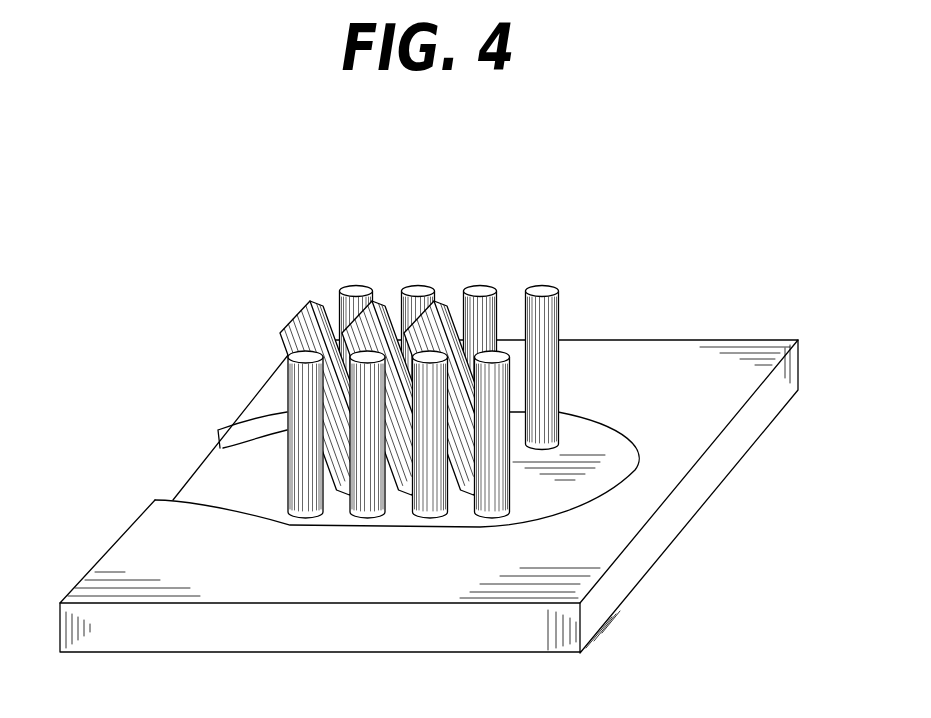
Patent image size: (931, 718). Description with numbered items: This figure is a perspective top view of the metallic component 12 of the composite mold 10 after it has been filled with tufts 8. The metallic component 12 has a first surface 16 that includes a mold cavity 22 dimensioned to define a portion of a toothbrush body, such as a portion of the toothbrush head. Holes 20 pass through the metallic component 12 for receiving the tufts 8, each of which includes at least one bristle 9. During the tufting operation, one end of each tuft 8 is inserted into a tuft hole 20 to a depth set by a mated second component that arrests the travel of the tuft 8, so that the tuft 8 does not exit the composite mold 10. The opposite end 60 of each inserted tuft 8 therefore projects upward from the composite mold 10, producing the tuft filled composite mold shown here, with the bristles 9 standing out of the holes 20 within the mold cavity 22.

The tufts 8 is at (338, 298).
The bristle 9 is at (502, 308).
The composite mold 10 is at (460, 440).
The metallic component 12 is at (460, 415).
The first surface 16 is at (690, 355).
The holes 20 is at (508, 510).
The mold cavity 22 is at (222, 475).
The opposite end 60 is at (508, 455).